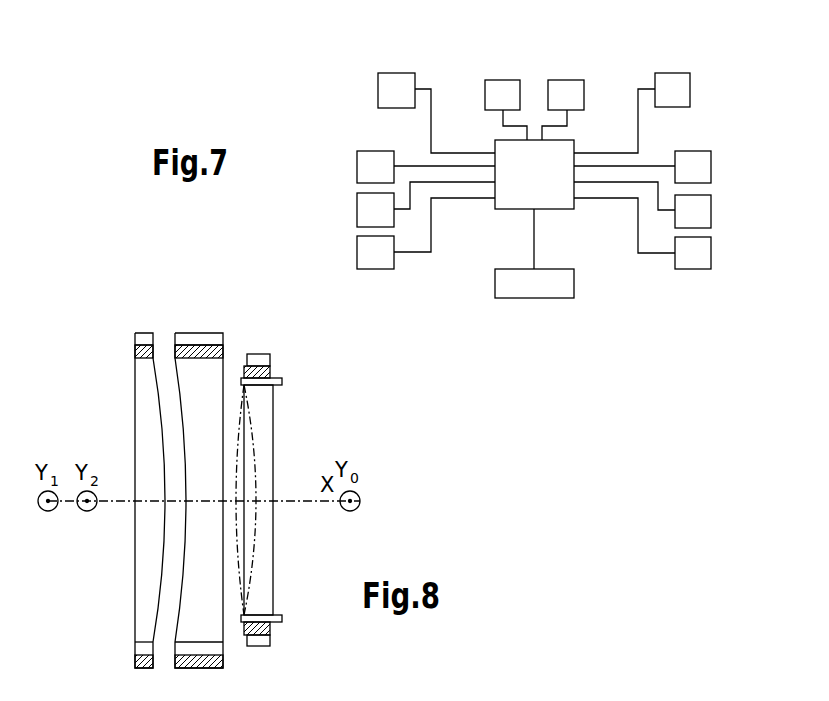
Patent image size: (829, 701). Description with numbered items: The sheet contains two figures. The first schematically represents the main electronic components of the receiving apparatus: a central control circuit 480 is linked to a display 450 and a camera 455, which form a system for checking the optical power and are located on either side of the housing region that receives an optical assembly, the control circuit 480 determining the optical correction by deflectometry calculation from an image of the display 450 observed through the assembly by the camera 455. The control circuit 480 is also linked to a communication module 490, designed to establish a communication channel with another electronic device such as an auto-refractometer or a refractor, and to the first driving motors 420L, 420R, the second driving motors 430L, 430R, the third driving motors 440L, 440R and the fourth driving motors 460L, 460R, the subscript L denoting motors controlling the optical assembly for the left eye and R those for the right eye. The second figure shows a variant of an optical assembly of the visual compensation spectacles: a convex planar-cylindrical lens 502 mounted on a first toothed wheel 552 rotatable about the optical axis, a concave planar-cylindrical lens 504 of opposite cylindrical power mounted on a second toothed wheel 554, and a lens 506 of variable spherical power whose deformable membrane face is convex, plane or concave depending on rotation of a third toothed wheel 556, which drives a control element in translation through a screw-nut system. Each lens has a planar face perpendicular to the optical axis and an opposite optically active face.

In FIG. 7, the first driving motor 420L is at (357, 172).
In FIG. 7, the second driving motor 430L is at (357, 218).
In FIG. 7, the third driving motor 440L is at (357, 262).
In FIG. 7, the fourth driving motor 460L is at (378, 92).
In FIG. 7, the first driving motor 420R is at (697, 151).
In FIG. 7, the second driving motor 430R is at (711, 210).
In FIG. 7, the third driving motor 440R is at (697, 269).
In FIG. 7, the fourth driving motor 460R is at (670, 73).
In FIG. 7, the display 450 is at (506, 80).
In FIG. 7, the camera 455 is at (560, 80).
In FIG. 7, the control circuit 480 is at (560, 209).
In FIG. 7, the communication module 490 is at (552, 298).
In FIG. 8, the convex planar-cylindrical lens 502 is at (135, 422).
In FIG. 8, the concave planar-cylindrical lens 504 is at (225, 627).
In FIG. 8, the lens of variable spherical power 506 is at (273, 455).
In FIG. 8, the first toothed wheel 552 is at (135, 350).
In FIG. 8, the second toothed wheel 554 is at (225, 350).
In FIG. 8, the third toothed wheel 556 is at (270, 372).